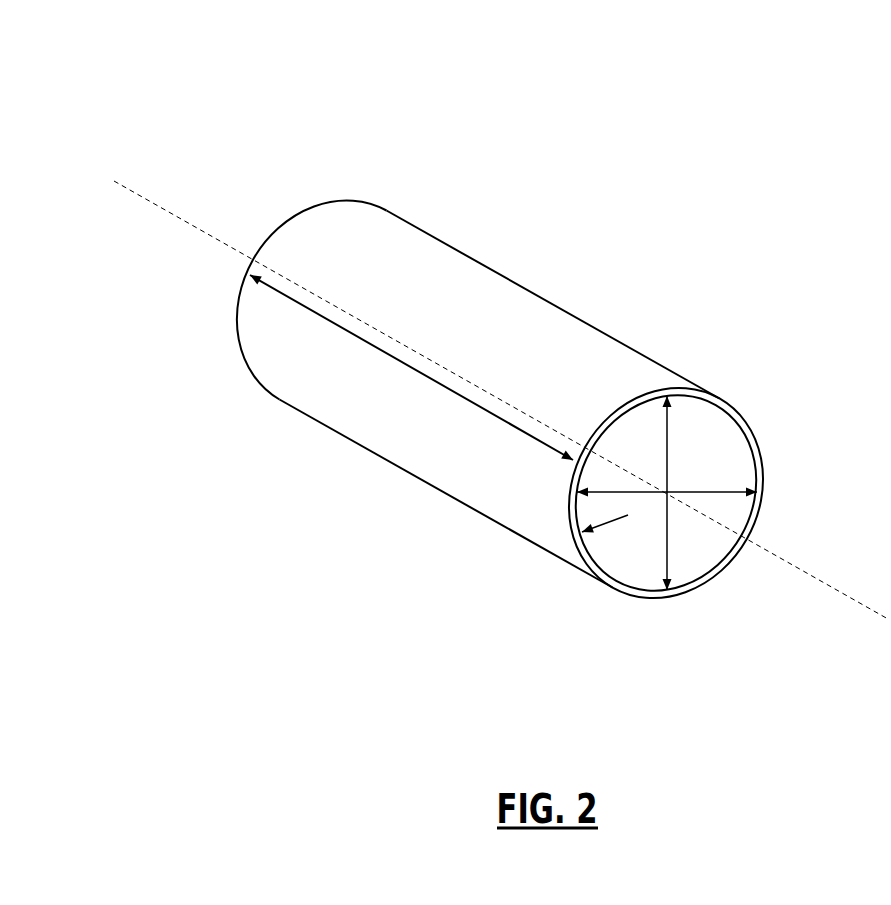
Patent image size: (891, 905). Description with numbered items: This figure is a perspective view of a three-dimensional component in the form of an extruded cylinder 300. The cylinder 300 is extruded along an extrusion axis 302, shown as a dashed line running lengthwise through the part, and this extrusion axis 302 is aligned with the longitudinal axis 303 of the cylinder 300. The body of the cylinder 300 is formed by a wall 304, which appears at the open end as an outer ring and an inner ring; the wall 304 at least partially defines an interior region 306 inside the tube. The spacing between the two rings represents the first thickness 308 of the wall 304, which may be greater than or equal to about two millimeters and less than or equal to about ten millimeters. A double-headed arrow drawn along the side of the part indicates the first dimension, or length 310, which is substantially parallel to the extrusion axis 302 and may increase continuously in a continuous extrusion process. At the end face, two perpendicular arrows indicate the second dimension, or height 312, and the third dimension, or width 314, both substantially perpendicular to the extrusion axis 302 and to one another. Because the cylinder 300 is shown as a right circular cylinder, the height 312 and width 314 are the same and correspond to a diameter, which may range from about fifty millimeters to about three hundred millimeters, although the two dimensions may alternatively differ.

The cylinder 300 is at (485, 382).
The extrusion axis 302 is at (196, 226).
The longitudinal axis 303 is at (402, 250).
The wall 304 is at (737, 416).
The interior region 306 is at (692, 418).
The first thickness 308 is at (570, 535).
The length 310 is at (353, 335).
The height 312 is at (672, 540).
The width 314 is at (727, 491).